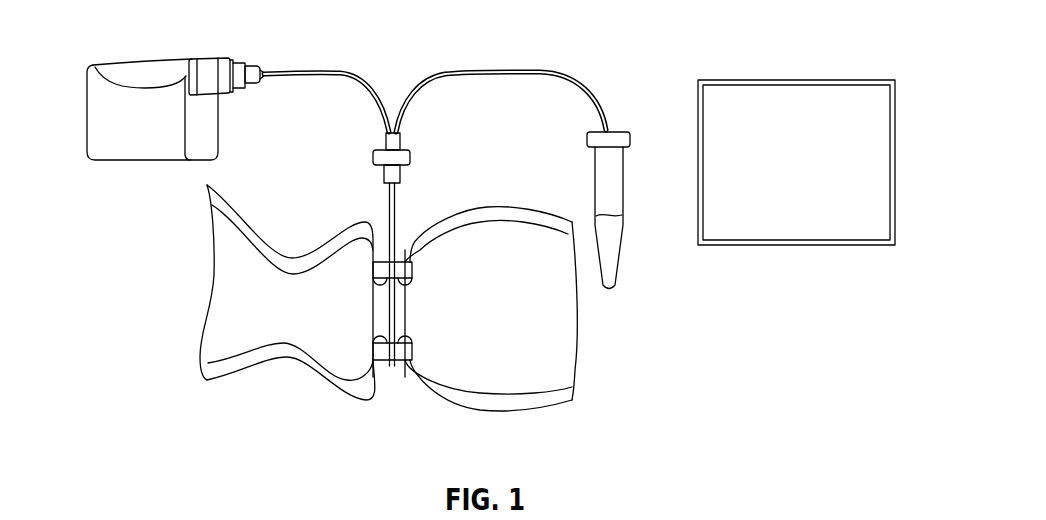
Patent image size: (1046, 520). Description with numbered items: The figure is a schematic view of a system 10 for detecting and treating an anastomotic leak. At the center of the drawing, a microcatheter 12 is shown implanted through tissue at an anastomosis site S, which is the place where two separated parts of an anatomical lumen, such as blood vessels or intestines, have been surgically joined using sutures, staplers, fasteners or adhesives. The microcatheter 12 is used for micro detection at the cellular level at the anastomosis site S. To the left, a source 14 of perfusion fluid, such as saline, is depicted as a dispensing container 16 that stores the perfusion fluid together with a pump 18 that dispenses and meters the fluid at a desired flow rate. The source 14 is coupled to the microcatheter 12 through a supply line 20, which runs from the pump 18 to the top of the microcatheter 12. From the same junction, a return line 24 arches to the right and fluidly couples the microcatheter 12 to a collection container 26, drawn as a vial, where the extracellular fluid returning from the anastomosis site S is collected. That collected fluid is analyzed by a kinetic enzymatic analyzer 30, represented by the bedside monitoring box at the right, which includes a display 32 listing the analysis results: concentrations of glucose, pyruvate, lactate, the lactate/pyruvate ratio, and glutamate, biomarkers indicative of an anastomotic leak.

The system 10 is at (318, 22).
The microcatheter 12 is at (398, 207).
The source of perfusion fluid 14 is at (161, 86).
The dispensing container 16 is at (155, 68).
The pump 18 is at (208, 133).
The supply line 20 is at (353, 87).
The return line 24 is at (487, 72).
The collection container 26 is at (611, 252).
The kinetic enzymatic analyzer 30 is at (822, 144).
The display 32 is at (878, 162).
The anastomosis site S is at (392, 368).